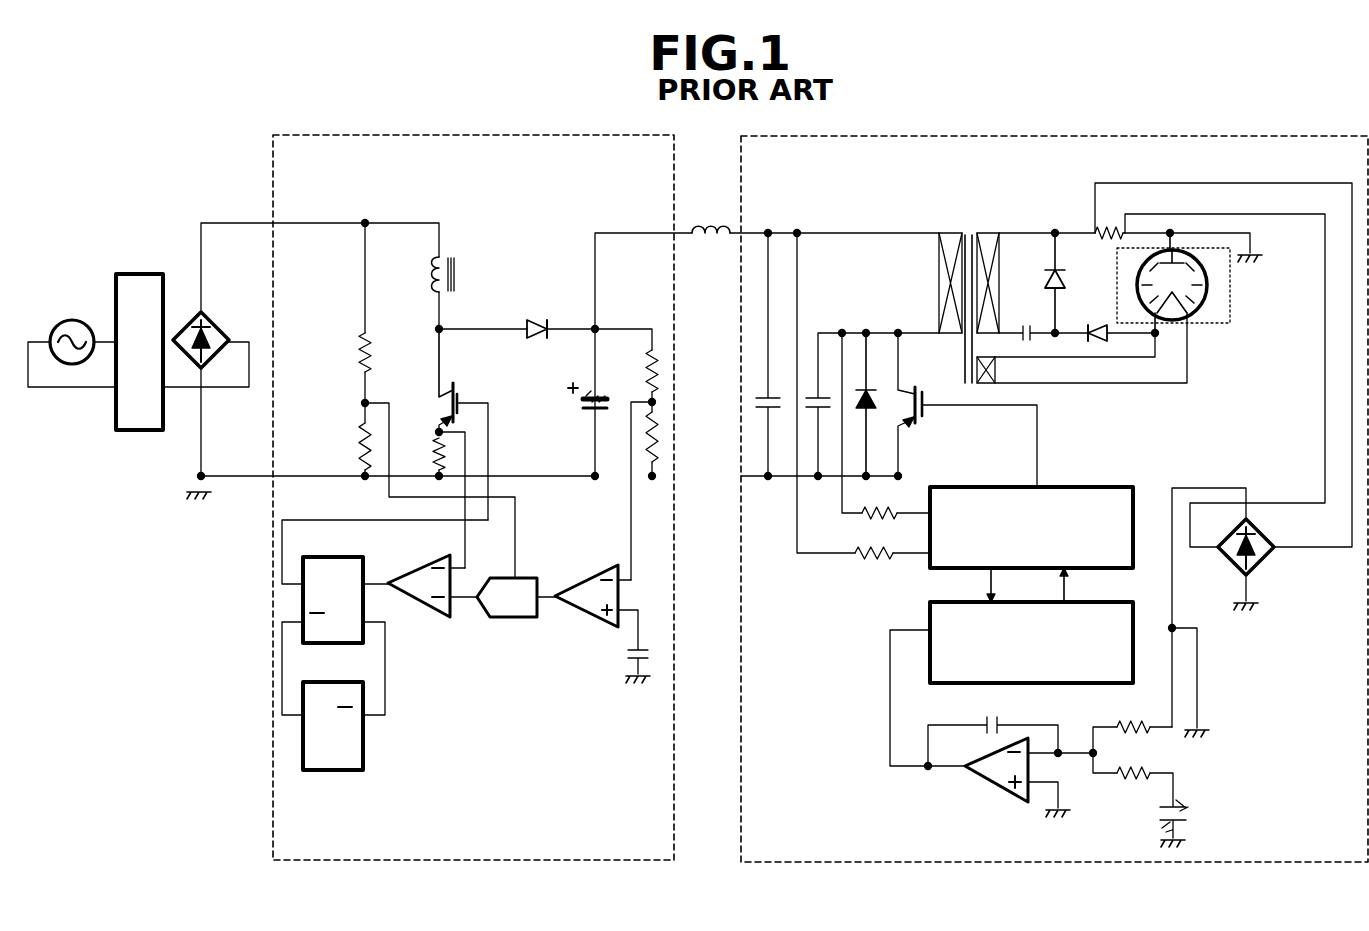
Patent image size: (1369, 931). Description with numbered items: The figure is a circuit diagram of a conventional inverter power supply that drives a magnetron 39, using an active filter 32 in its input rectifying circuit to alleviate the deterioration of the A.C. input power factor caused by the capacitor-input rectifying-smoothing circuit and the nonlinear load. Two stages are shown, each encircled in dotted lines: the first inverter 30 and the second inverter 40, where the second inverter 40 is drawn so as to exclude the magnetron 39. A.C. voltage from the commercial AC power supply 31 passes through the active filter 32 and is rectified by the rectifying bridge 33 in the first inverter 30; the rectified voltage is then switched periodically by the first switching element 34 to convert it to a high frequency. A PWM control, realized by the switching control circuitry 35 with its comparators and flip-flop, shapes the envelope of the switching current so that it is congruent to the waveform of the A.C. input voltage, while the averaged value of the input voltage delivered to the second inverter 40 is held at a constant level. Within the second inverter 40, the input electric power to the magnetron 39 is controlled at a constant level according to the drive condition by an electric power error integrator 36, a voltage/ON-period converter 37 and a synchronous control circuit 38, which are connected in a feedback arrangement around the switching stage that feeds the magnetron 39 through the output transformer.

The first inverter 30 is at (510, 133).
The commercial AC power supply 31 is at (55, 319).
The active filter 32 is at (130, 255).
The rectifying bridge 33 is at (222, 316).
The first switching element 34 is at (466, 394).
The switching control circuit (flip-flop) 35 is at (424, 636).
The electric power error integrator 36 is at (987, 787).
The voltage/ON-period converter 37 is at (1108, 603).
The synchronous control circuit 38 is at (1108, 487).
The magnetron 39 is at (1207, 293).
The second inverter 40 is at (1010, 135).